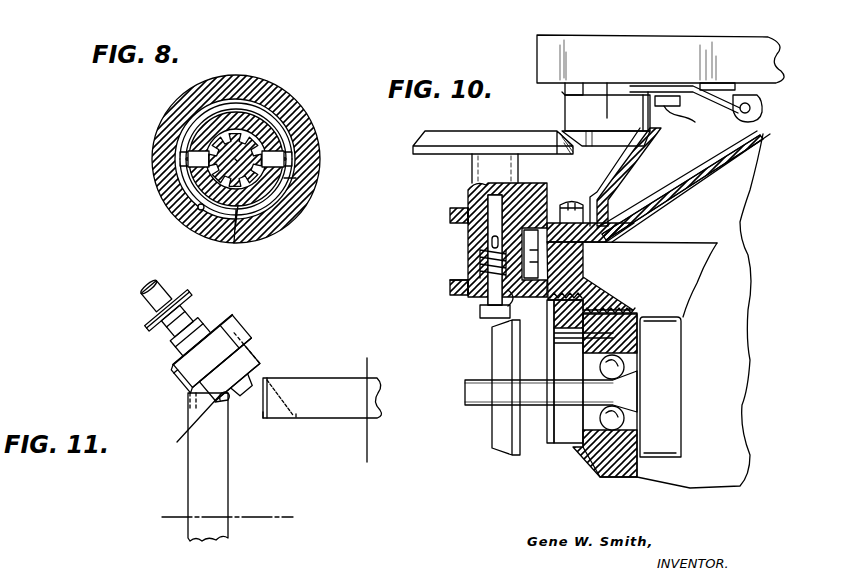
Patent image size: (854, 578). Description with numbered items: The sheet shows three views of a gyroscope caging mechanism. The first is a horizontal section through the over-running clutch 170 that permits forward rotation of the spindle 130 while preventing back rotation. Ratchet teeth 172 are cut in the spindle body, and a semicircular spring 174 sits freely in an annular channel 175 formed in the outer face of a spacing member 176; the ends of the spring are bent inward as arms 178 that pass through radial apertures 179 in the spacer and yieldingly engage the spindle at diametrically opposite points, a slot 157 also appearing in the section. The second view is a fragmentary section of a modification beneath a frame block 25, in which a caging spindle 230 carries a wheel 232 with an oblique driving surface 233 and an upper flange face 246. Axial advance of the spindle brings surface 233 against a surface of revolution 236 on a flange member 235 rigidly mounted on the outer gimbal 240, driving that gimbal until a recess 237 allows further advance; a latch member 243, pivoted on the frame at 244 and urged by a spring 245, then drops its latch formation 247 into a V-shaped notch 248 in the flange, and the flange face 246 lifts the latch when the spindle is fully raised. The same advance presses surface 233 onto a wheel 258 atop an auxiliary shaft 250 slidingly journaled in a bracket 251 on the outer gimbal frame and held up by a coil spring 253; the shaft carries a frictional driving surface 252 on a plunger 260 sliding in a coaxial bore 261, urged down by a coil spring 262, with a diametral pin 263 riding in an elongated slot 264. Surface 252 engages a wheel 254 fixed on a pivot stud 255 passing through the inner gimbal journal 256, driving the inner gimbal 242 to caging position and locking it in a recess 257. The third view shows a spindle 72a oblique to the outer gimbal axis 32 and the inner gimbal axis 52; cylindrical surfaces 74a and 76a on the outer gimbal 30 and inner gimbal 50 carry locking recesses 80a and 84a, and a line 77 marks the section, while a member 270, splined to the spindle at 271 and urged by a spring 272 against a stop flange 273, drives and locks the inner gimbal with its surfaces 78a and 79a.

In FIG. 8, the spindle 130 is at (238, 130).
In FIG. 8, the semicircular spring 174 is at (240, 150).
In FIG. 8, the spacing member 176 is at (265, 140).
In FIG. 8, the ratchet teeth 172 is at (278, 158).
In FIG. 8, the radial apertures 179 is at (294, 163).
In FIG. 8, the spring arms 178 is at (300, 176).
In FIG. 8, the over-running clutch 170 is at (301, 196).
In FIG. 8, the annular channel 175 is at (203, 210).
In FIG. 8, the slot 157 is at (236, 220).
In FIG. 11, the spindle 72a is at (148, 303).
In FIG. 11, the locking surface 79a is at (226, 318).
In FIG. 11, the member 270 is at (255, 322).
In FIG. 11, the spline 271 is at (252, 333).
In FIG. 11, the driving surface 78a is at (258, 341).
In FIG. 11, the spring 272 is at (170, 342).
In FIG. 11, the spindle stop flange 273 is at (243, 358).
In FIG. 11, the outer gimbal axis 32 is at (367, 358).
In FIG. 11, the outer gimbal 30 is at (330, 368).
In FIG. 11, the surface of revolution 76a is at (190, 406).
In FIG. 11, the diagonal slot 77 is at (185, 437).
In FIG. 11, the surface of revolution 74a is at (268, 413).
In FIG. 11, the locking recess 84a is at (236, 415).
In FIG. 11, the locking recess 80a is at (296, 415).
In FIG. 11, the inner gimbal 50 is at (182, 495).
In FIG. 11, the inner gimbal axis 52 is at (176, 519).
In FIG. 10, the table block 25 is at (645, 37).
In FIG. 10, the caging spindle 230 is at (598, 85).
In FIG. 10, the wheel 232 is at (617, 97).
In FIG. 10, the latch member 243 is at (672, 88).
In FIG. 10, the spring 245 is at (728, 85).
In FIG. 10, the flange face 246 is at (568, 96).
In FIG. 10, the oblique driving surface 233 is at (600, 132).
In FIG. 10, the surface of revolution 236 is at (648, 133).
In FIG. 10, the pivot 244 is at (760, 107).
In FIG. 10, the latch formation 247 is at (680, 104).
In FIG. 10, the notch 248 is at (684, 118).
In FIG. 10, the flange member 235 is at (668, 149).
In FIG. 10, the recess 237 is at (632, 150).
In FIG. 10, the outer gimbal 240 is at (770, 162).
In FIG. 10, the inner gimbal 242 is at (742, 224).
In FIG. 10, the wheel 258 is at (500, 127).
In FIG. 10, the auxiliary shaft 250 is at (471, 170).
In FIG. 10, the bracket 251 is at (451, 214).
In FIG. 10, the coil spring 253 is at (466, 241).
In FIG. 10, the diametral pin 263 is at (486, 250).
In FIG. 10, the axially elongated slot 264 is at (478, 264).
In FIG. 10, the coil spring 262 is at (468, 272).
In FIG. 10, the plunger 260 is at (465, 304).
In FIG. 10, the frictional driving surface 252 is at (482, 319).
In FIG. 10, the coaxial bore 261 is at (510, 300).
In FIG. 10, the recess 257 is at (490, 344).
In FIG. 10, the pivot stud 255 is at (530, 374).
In FIG. 10, the wheel 254 is at (492, 427).
In FIG. 10, the inner gimbal journal 256 is at (640, 418).